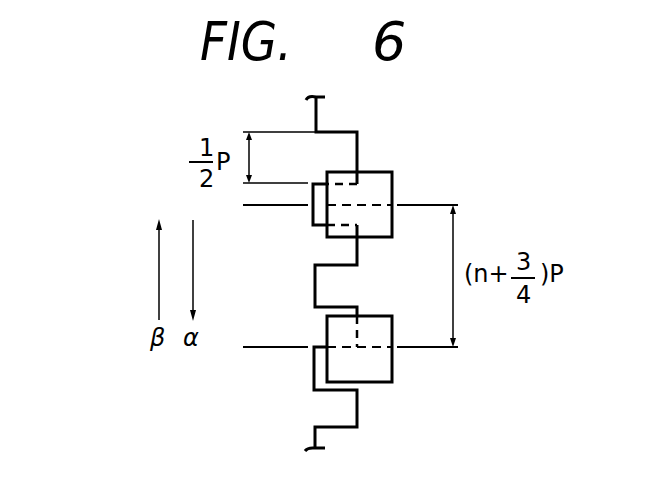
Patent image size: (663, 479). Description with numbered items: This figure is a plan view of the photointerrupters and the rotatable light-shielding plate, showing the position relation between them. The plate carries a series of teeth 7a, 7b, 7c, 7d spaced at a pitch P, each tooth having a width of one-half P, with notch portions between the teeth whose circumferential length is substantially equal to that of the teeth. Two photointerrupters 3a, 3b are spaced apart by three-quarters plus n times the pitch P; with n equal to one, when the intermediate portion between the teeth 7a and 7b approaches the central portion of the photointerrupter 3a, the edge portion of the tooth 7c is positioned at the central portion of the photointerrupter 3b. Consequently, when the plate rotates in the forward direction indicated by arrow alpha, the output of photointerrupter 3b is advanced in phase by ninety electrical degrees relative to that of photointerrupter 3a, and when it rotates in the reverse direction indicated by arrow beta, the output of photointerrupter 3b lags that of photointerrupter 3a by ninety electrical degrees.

The photointerrupter 3a is at (396, 193).
The photointerrupter 3b is at (393, 366).
The tooth 7a is at (330, 140).
The tooth 7b is at (343, 254).
The tooth 7c is at (340, 336).
The tooth 7d is at (338, 408).